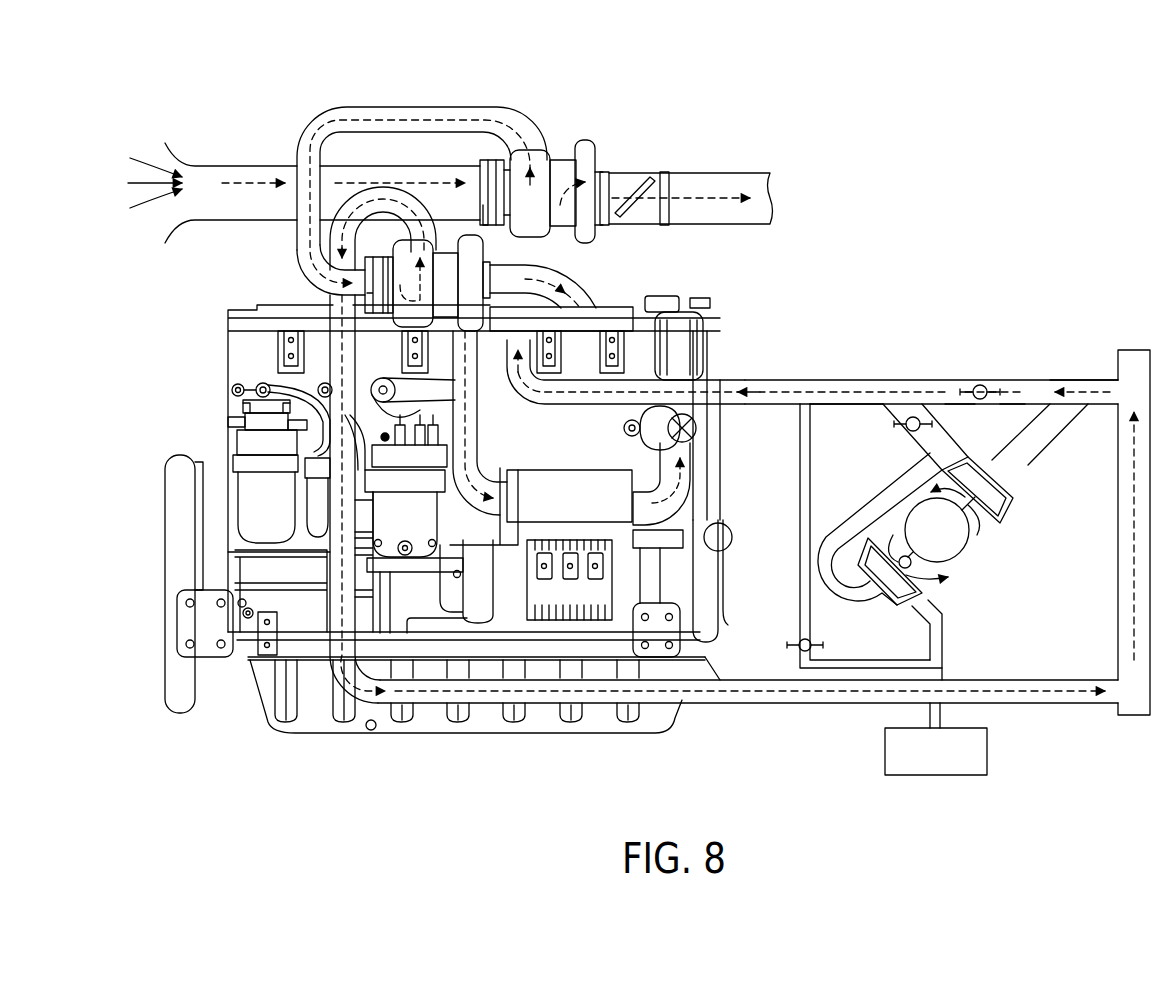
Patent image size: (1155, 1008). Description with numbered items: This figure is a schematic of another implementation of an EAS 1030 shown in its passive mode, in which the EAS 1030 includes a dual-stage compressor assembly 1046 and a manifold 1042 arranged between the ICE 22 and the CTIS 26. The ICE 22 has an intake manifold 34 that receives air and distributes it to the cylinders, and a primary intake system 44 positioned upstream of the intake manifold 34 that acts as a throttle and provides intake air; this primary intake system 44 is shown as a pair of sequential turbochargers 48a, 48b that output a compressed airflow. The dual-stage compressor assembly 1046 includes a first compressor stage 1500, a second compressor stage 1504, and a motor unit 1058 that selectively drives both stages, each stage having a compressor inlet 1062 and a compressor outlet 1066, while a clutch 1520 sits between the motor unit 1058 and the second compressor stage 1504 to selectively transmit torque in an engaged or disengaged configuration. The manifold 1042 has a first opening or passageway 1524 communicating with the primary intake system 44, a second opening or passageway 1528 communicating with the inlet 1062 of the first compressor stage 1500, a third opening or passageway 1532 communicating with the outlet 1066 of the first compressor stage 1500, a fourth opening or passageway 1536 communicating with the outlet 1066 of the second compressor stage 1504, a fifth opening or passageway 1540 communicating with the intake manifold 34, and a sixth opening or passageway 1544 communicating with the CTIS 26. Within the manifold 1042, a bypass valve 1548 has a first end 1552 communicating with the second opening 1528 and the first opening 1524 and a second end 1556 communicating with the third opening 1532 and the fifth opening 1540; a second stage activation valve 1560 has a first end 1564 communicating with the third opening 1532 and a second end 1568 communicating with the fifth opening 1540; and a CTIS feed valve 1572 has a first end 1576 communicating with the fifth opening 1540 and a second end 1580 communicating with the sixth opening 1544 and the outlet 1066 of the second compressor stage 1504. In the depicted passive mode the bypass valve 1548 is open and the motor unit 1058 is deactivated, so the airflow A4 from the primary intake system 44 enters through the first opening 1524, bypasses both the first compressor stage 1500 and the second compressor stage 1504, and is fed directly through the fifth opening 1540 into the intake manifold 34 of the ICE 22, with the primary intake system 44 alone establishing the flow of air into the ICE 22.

The ICE 22 is at (188, 527).
The CTIS 26 is at (987, 767).
The intake manifold 34 is at (575, 388).
The primary intake system 44 is at (572, 124).
The sequential turbocharger 48a is at (584, 157).
The sequential turbocharger 48b is at (450, 255).
The EAS 1030 is at (1025, 185).
The manifold 1042 is at (1098, 378).
The dual-stage compressor assembly 1046 is at (1005, 566).
The motor unit 1058 is at (964, 555).
The compressor inlet 1062 is at (997, 470).
The compressor outlet 1066 is at (893, 466).
The first compressor stage 1500 is at (1012, 506).
The second compressor stage 1504 is at (862, 547).
The clutch 1520 is at (940, 603).
The first opening or passageway 1524 is at (1114, 360).
The second opening or passageway 1528 is at (1027, 465).
The third opening or passageway 1532 is at (936, 455).
The fourth opening or passageway 1536 is at (920, 612).
The fifth opening or passageway 1540 is at (750, 377).
The sixth opening or passageway 1544 is at (950, 720).
The bypass valve 1548 is at (983, 385).
The first end 1552 is at (1012, 385).
The second end 1556 is at (962, 390).
The second stage activation valve 1560 is at (950, 462).
The first end 1564 is at (922, 440).
The second end 1568 is at (898, 420).
The CTIS feed valve 1572 is at (803, 640).
The first end 1576 is at (805, 620).
The second end 1580 is at (850, 598).
The airflow A4 is at (807, 388).